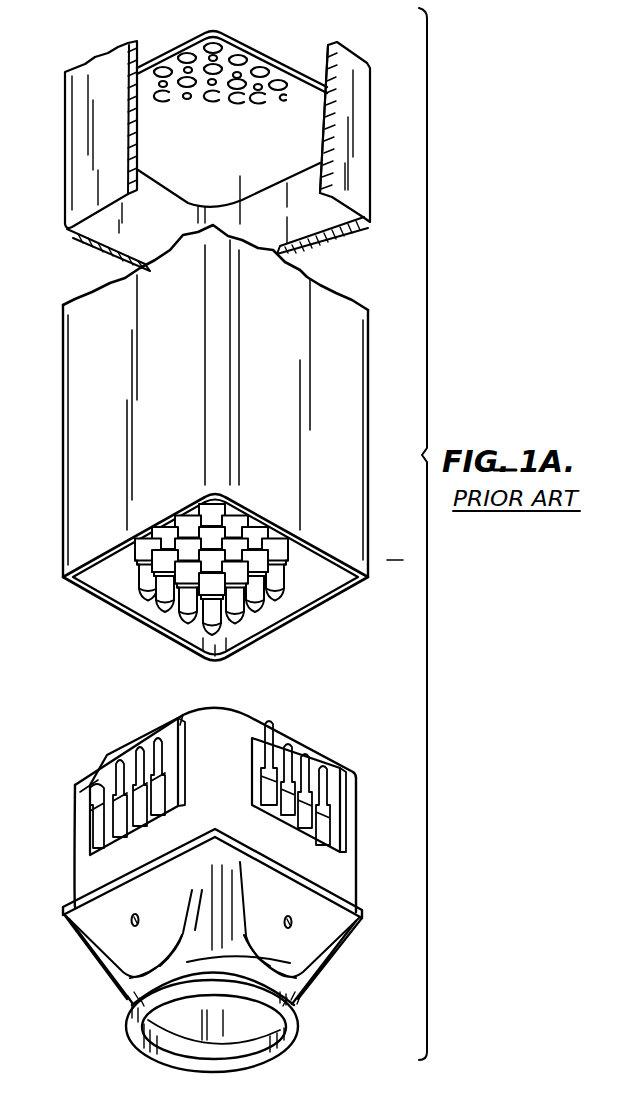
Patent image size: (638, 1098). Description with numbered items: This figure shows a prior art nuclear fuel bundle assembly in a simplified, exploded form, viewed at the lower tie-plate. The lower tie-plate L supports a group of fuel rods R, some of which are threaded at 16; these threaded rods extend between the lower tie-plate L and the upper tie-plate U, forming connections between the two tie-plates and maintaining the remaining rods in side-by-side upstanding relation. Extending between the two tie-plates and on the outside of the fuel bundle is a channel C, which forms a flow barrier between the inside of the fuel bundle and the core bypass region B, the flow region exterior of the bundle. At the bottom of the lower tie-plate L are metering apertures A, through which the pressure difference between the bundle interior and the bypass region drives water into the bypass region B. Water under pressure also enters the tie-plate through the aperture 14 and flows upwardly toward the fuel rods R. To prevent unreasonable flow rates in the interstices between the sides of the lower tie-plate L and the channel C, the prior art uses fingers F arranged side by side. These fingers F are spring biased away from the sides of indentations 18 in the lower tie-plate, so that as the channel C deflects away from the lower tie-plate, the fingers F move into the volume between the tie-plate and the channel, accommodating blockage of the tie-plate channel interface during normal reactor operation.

The upper tie-plate U is at (60, 113).
The channel C is at (370, 402).
The core bypass region B is at (395, 549).
The fuel rods R is at (250, 575).
The threaded portion of fuel rods 16 is at (288, 582).
The lower tie-plate L is at (63, 906).
The fingers F is at (103, 811).
The indentations 18 is at (102, 847).
The metering apertures A is at (132, 922).
The aperture 14 is at (213, 1040).